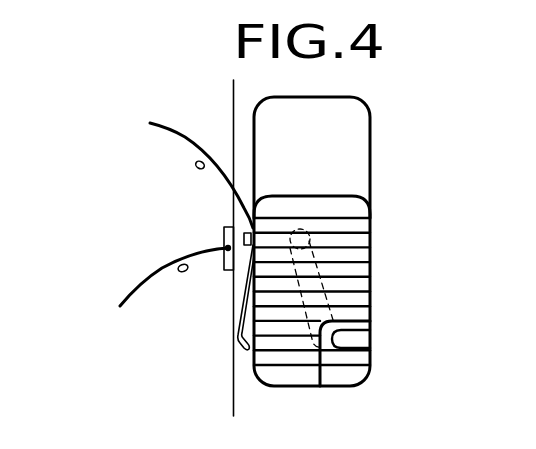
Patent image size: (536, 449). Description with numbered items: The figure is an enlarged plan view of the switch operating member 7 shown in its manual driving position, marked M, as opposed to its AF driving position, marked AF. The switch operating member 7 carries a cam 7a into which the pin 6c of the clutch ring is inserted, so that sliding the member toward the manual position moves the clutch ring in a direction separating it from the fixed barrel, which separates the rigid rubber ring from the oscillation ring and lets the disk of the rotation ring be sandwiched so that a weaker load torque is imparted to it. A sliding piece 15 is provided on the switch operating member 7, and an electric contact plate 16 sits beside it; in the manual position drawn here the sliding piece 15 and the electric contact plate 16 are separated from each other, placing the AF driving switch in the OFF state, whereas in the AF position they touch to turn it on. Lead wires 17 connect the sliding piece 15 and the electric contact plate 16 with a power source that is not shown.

The switch operating member 7 is at (333, 200).
The cam 7a is at (320, 285).
The pin 6c is at (298, 226).
The AF driving position AF is at (380, 242).
The motor M is at (380, 340).
The sliding piece 15 is at (240, 307).
The electric contact plate 16 is at (222, 240).
The lead wires 17 is at (172, 132).